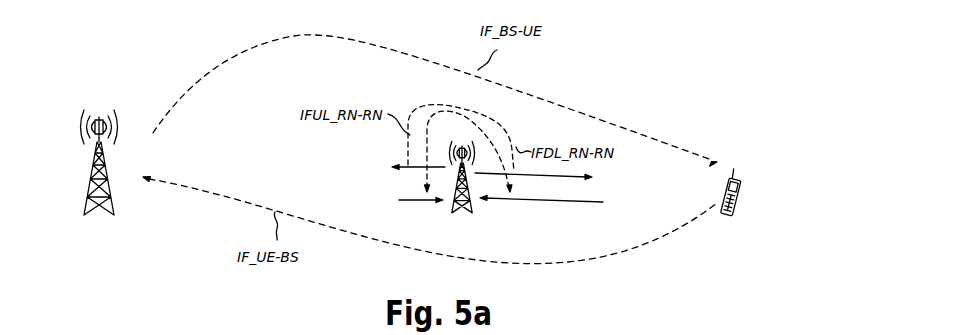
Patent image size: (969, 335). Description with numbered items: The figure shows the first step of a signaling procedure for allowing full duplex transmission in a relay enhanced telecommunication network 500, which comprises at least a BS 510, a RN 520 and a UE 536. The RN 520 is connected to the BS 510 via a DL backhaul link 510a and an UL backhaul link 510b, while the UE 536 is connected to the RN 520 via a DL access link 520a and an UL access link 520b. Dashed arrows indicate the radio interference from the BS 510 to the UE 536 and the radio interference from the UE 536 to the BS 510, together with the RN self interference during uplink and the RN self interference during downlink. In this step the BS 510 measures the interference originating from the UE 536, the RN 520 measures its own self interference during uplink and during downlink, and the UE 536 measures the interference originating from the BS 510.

The relay enhanced telecommunication network 500 is at (662, 61).
The BS 510 is at (92, 194).
The DL backhaul link 510a is at (407, 202).
The UL backhaul link 510b is at (397, 170).
The RN 520 is at (468, 201).
The DL access link 520a is at (578, 180).
The UL access link 520b is at (582, 204).
The UE 536 is at (742, 193).